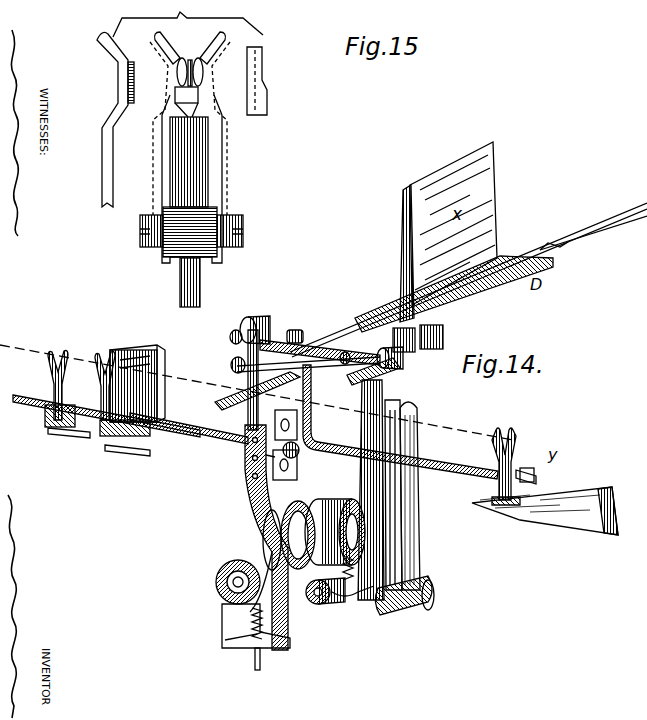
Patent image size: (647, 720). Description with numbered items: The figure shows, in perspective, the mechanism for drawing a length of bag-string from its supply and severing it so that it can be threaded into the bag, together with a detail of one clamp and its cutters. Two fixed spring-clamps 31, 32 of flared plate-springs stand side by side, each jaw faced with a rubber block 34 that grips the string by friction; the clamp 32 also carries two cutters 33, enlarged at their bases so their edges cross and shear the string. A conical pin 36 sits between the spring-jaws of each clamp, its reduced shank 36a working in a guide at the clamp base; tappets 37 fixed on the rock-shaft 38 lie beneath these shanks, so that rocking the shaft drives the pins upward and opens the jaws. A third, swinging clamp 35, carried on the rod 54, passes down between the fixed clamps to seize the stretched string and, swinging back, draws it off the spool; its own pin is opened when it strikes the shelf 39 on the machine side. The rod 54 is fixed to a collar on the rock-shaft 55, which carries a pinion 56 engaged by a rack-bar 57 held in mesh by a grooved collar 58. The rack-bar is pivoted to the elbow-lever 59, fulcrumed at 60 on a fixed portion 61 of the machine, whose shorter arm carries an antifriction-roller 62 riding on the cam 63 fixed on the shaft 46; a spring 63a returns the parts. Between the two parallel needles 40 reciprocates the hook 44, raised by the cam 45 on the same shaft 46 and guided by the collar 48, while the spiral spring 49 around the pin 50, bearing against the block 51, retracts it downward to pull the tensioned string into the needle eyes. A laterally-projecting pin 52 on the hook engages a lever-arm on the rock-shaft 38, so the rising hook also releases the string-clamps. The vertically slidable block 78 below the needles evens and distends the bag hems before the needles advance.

In FIG. 14, the spring-clamp 31 is at (54, 378).
In FIG. 15, the spring-clamp 32 is at (119, 94).
In FIG. 14, the spring-clamp 32 is at (106, 385).
In FIG. 15, the cutter 33 is at (197, 76).
In FIG. 15, the rubber block 34 is at (135, 97).
In FIG. 14, the swinging clamp 35 is at (505, 452).
In FIG. 15, the conical pin 36 is at (170, 168).
In FIG. 14, the conical pin 36 is at (50, 418).
In FIG. 15, the reduced shank 36a is at (200, 283).
In FIG. 14, the tappet 37 is at (68, 432).
In FIG. 14, the rock-shaft 38 is at (212, 441).
In FIG. 14, the shelf 39 is at (580, 525).
In FIG. 14, the needle 40 is at (355, 332).
In FIG. 14, the hook 44 is at (241, 389).
In FIG. 14, the cam 45 is at (308, 598).
In FIG. 14, the shaft 46 is at (233, 582).
In FIG. 14, the collar 48 is at (222, 574).
In FIG. 14, the spiral spring 49 is at (247, 645).
In FIG. 14, the pin 50 is at (262, 664).
In FIG. 14, the block 51 is at (228, 616).
In FIG. 14, the laterally-projecting pin 52 is at (246, 468).
In FIG. 14, the rod 54 is at (440, 474).
In FIG. 14, the rock-shaft 55 is at (294, 330).
In FIG. 14, the pinion 56 is at (230, 362).
In FIG. 14, the rack-bar 57 is at (229, 334).
In FIG. 14, the grooved collar 58 is at (256, 312).
In FIG. 14, the elbow-lever 59 is at (380, 488).
In FIG. 14, the fulcrum 60 is at (400, 610).
In FIG. 14, the fixed portion 61 is at (355, 395).
In FIG. 14, the antifriction-roller 62 is at (328, 604).
In FIG. 14, the cam 63 is at (305, 510).
In FIG. 14, the spring 63a is at (350, 596).
In FIG. 14, the vertically slidable block 78 is at (444, 340).